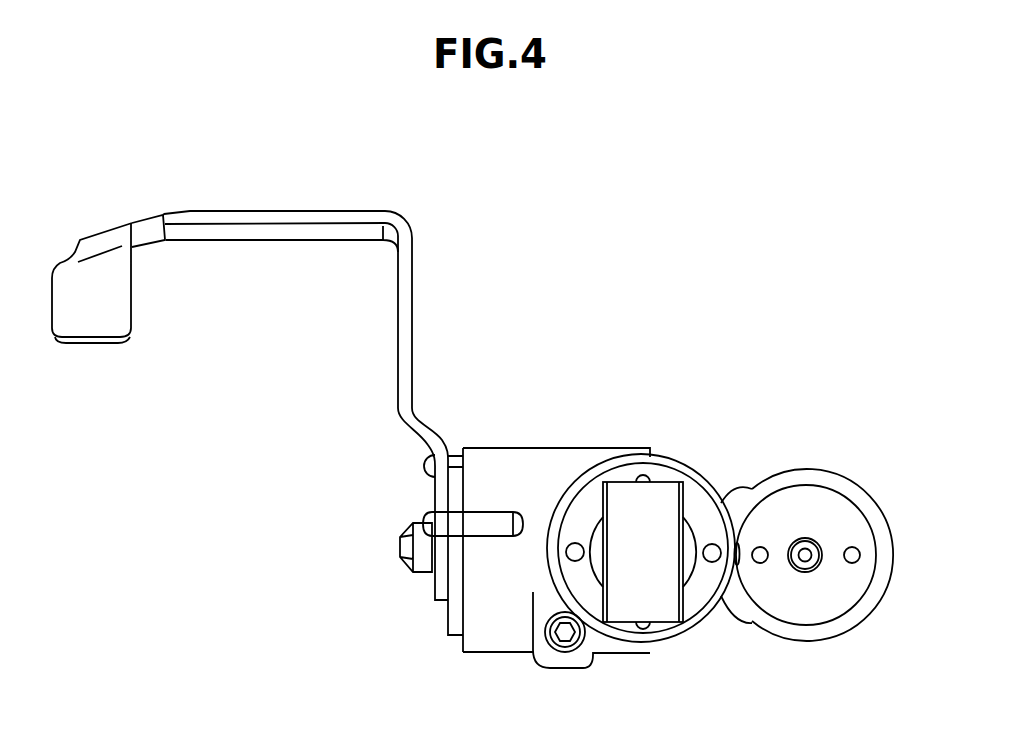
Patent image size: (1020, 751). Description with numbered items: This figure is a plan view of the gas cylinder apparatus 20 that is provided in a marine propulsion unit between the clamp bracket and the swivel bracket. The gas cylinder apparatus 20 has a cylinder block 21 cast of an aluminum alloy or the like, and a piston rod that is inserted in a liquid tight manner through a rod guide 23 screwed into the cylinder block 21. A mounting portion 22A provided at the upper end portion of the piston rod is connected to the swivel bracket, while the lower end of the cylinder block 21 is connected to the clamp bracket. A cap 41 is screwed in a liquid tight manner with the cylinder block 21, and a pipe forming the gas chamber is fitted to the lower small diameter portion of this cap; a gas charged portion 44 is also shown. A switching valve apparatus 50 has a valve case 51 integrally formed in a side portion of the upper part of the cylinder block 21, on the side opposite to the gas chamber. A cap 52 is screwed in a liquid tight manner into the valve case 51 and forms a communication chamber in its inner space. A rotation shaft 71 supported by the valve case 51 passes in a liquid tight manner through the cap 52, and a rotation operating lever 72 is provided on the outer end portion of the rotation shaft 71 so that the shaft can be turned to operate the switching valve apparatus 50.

The gas cylinder apparatus 20 is at (793, 388).
The cylinder block 21 is at (693, 637).
The mounting portion 22A is at (667, 610).
The rod guide 23 is at (697, 502).
The cap 41 is at (823, 505).
The gas charged portion 44 is at (817, 542).
The switching valve apparatus 50 is at (433, 608).
The valve case 51 is at (497, 640).
The cap 52 is at (445, 622).
The rotation shaft 71 is at (400, 536).
The rotation operating lever 72 is at (118, 303).